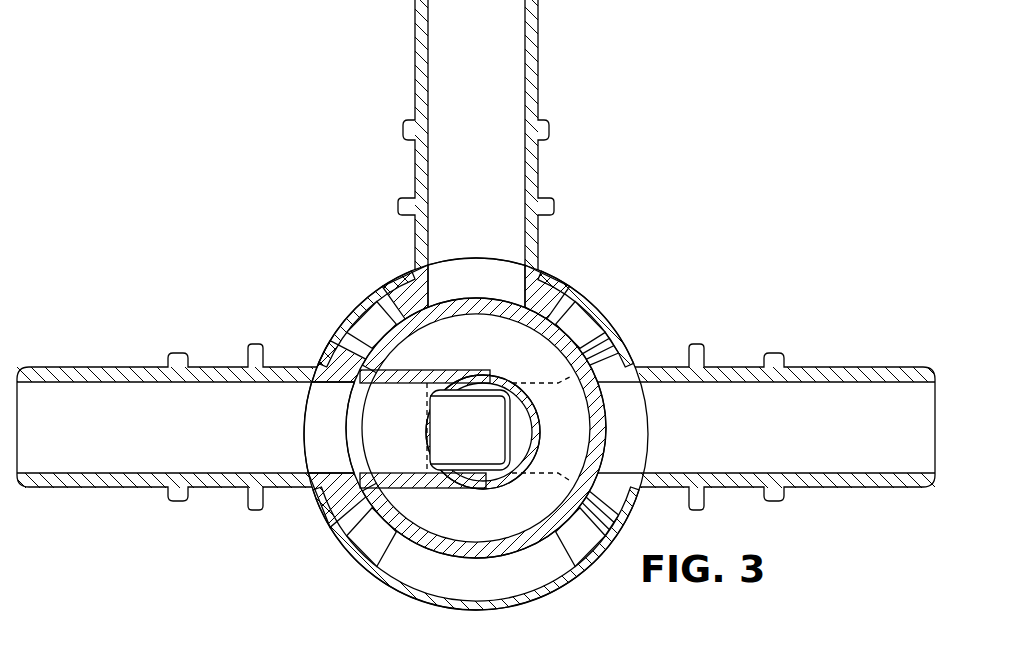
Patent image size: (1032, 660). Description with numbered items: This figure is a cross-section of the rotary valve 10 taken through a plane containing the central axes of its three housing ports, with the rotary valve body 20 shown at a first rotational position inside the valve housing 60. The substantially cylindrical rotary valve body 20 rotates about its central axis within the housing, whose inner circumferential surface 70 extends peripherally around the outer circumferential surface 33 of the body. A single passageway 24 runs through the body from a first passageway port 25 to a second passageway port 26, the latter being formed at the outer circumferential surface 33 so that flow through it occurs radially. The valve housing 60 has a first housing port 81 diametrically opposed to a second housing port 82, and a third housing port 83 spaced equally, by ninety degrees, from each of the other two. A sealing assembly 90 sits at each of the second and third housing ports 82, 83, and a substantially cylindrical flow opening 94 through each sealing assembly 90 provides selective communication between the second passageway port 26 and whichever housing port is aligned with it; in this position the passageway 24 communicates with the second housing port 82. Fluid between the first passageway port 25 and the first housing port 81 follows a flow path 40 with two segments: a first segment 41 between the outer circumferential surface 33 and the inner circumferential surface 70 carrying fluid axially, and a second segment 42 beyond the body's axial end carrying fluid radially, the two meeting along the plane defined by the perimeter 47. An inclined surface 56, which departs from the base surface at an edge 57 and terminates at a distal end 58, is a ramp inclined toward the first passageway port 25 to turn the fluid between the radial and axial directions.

The rotary valve 10 is at (658, 262).
The rotary valve body 20 is at (408, 548).
The passageway 24 is at (418, 470).
The first passageway port 25 is at (440, 460).
The second passageway port 26 is at (352, 398).
The outer circumferential surface 33 is at (614, 360).
The flow path 40 is at (533, 428).
The first segment 41 is at (632, 420).
The second segment 42 is at (478, 408).
The perimeter 47 is at (548, 380).
The inclined surface 56 is at (480, 456).
The edge 57 is at (517, 455).
The distal end 58 is at (428, 402).
The valve housing 60 is at (352, 575).
The inner circumferential surface 70 is at (598, 398).
The first housing port 81 is at (640, 488).
The second housing port 82 is at (308, 470).
The third housing port 83 is at (432, 266).
The sealing assembly 90 is at (400, 283).
The flow opening 94 is at (516, 274).